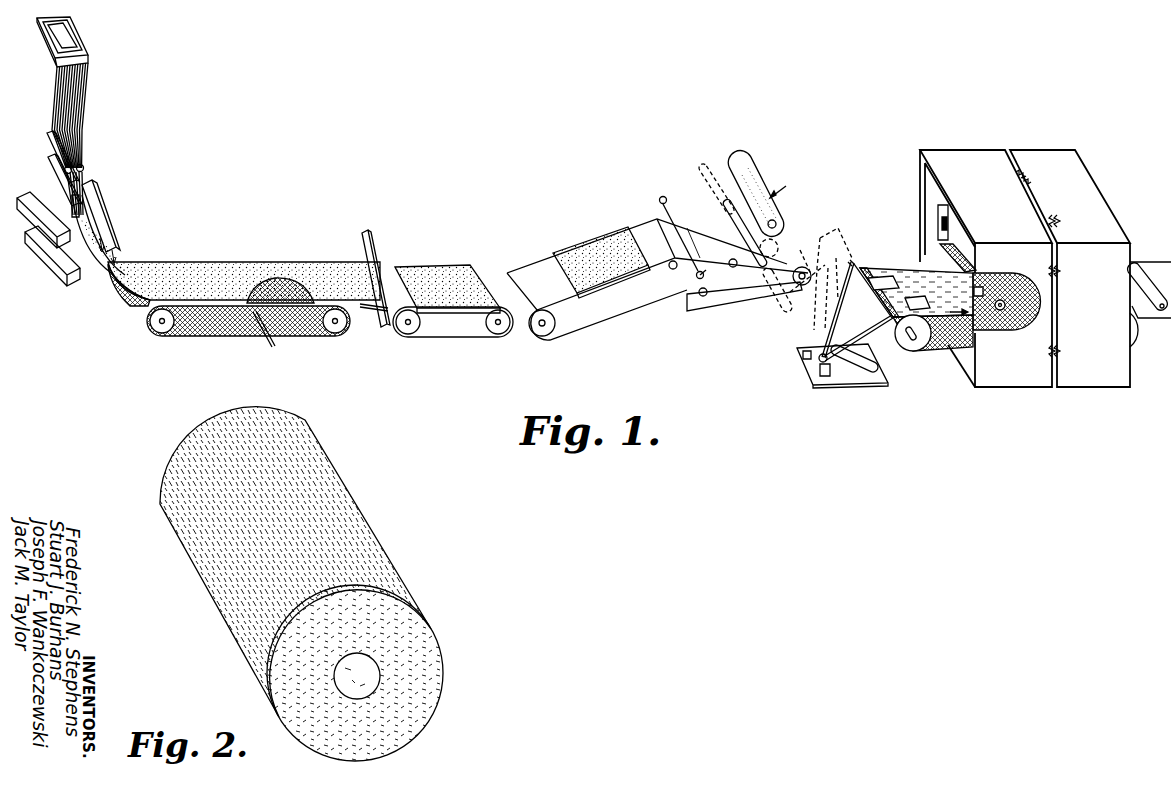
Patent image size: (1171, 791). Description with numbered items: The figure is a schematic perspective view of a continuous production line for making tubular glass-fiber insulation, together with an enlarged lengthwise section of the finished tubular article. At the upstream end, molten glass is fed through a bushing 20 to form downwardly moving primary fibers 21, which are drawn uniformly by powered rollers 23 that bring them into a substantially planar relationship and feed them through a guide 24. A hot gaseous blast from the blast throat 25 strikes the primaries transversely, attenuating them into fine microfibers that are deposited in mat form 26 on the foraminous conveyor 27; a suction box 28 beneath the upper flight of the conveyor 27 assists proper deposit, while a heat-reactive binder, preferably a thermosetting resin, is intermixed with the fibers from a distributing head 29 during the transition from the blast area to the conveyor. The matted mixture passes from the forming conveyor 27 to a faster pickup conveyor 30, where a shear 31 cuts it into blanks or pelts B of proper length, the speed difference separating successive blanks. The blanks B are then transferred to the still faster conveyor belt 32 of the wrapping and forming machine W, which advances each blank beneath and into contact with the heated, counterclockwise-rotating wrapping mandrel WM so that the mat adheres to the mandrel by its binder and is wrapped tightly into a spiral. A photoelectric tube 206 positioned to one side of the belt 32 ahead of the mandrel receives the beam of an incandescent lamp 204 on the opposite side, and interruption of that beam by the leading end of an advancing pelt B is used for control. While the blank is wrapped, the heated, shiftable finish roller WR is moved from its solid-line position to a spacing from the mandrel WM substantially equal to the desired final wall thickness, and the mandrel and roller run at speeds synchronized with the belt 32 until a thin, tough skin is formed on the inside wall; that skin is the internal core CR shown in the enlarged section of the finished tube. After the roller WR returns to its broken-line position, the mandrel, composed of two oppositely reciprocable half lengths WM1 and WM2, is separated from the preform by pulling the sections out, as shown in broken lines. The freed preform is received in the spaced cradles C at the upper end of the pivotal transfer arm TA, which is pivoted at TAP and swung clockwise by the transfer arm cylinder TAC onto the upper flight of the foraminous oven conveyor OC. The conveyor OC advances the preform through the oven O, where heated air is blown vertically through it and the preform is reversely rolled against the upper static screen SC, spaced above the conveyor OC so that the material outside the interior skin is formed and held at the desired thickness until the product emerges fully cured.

In FIG. 1, the bushing 20 is at (90, 60).
In FIG. 1, the primary fibers 21 is at (81, 118).
In FIG. 1, the powered rollers 23 is at (84, 169).
In FIG. 1, the guide 24 is at (50, 177).
In FIG. 1, the blast throat 25 is at (34, 264).
In FIG. 1, the mat 26 is at (236, 270).
In FIG. 1, the foraminous conveyor 27 is at (232, 336).
In FIG. 1, the suction box 28 is at (300, 316).
In FIG. 1, the distributing head 29 is at (117, 230).
In FIG. 1, the pickup conveyor 30 is at (460, 338).
In FIG. 1, the shear 31 is at (383, 262).
In FIG. 1, the conveyor belt 32 is at (533, 268).
In FIG. 1, the blank or pelt B is at (452, 275).
In FIG. 1, the incandescent lamp 204 is at (690, 302).
In FIG. 1, the photoelectric tube 206 is at (659, 201).
In FIG. 1, the wrapping mandrel WM is at (726, 205).
In FIG. 1, the mandrel half length WM1 is at (700, 170).
In FIG. 1, the mandrel half length WM2 is at (764, 306).
In FIG. 1, the finish roller WR is at (746, 174).
In FIG. 1, the wrapping and forming machine W is at (786, 181).
In FIG. 1, the cradles C is at (852, 260).
In FIG. 1, the transfer arm TA is at (797, 328).
In FIG. 1, the transfer arm pivot TAP is at (828, 386).
In FIG. 1, the transfer arm cylinder TAC is at (862, 386).
In FIG. 1, the static screen SC is at (942, 247).
In FIG. 1, the oven O is at (968, 152).
In FIG. 1, the oven conveyor OC is at (952, 355).
In FIG. 2, the internal skin or core CR is at (372, 684).